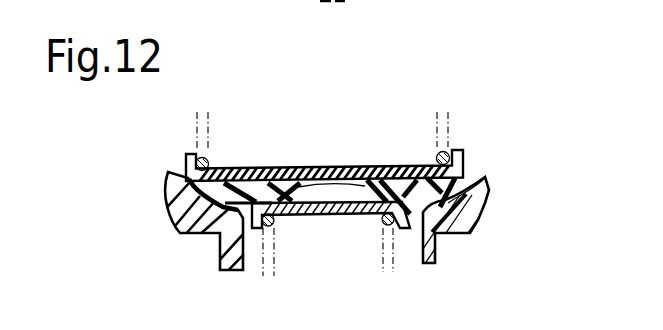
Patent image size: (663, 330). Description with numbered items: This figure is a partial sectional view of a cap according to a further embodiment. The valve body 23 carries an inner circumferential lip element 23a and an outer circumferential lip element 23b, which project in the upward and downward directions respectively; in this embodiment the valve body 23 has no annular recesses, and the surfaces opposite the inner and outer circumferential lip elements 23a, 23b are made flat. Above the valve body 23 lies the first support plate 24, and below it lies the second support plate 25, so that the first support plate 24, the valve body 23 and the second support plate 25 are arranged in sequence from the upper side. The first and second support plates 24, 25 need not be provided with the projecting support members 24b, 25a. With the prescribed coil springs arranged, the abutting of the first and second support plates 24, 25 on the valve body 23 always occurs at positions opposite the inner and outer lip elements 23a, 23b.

The valve body 23 is at (440, 195).
The inner circumferential lip element 23a is at (368, 183).
The outer circumferential lip element 23b is at (455, 203).
The first support plate 24 is at (462, 153).
The support member 24b is at (220, 178).
The second support plate 25 is at (298, 205).
The support member 25a is at (363, 200).